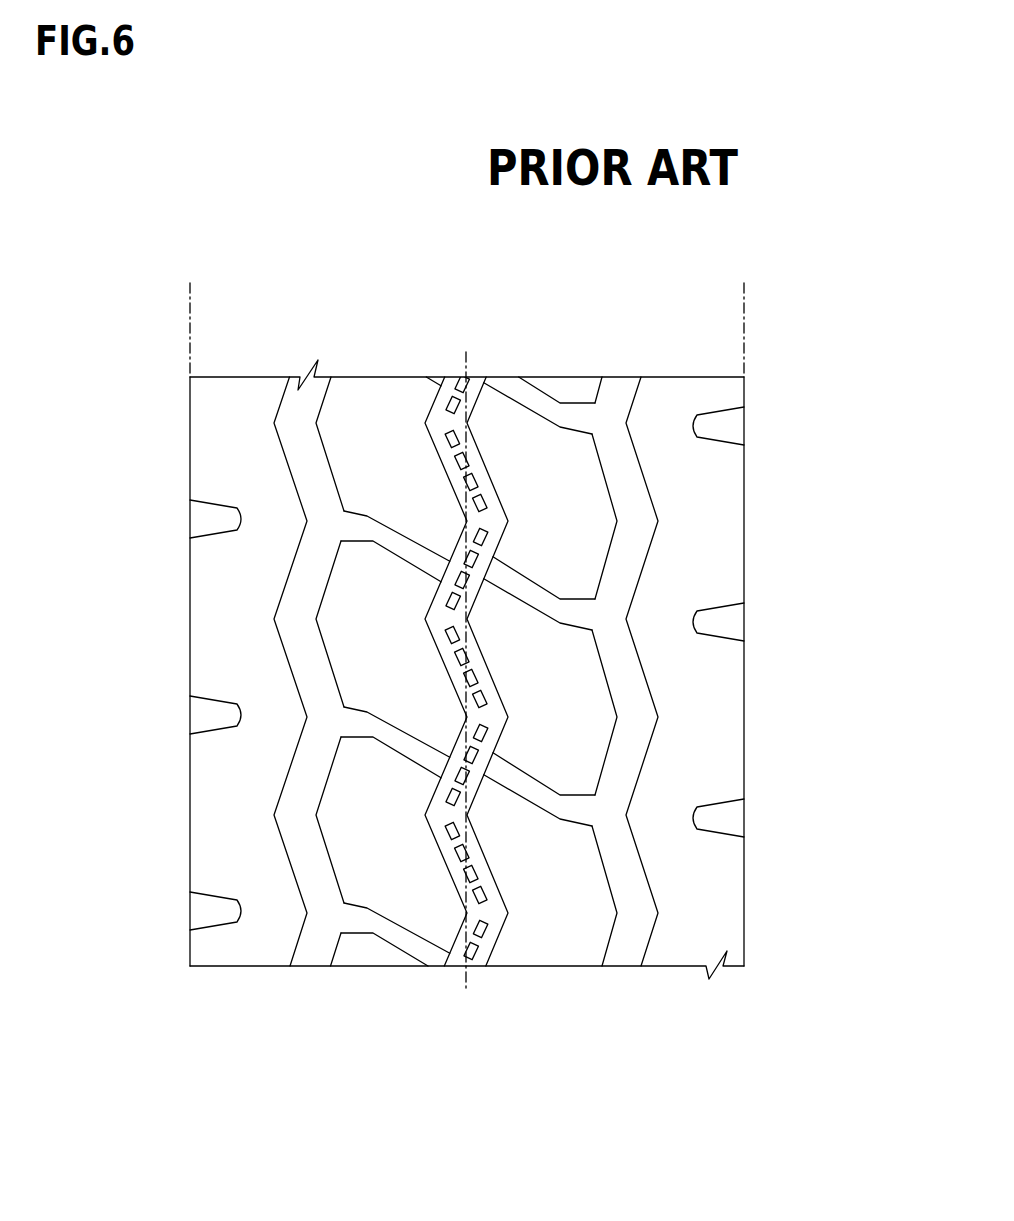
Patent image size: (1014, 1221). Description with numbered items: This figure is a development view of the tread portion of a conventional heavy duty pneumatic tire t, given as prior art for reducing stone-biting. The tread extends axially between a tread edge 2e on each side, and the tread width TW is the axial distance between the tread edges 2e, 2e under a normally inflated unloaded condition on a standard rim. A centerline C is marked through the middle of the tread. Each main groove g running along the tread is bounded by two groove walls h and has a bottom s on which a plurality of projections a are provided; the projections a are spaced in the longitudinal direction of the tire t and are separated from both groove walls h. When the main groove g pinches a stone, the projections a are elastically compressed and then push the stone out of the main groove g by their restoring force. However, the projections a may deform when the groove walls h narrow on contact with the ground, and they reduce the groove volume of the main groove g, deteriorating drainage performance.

The tire t is at (773, 282).
The tread width TW is at (744, 286).
The tread edge 2e is at (190, 410).
The tire equator C is at (466, 657).
The groove wall h is at (430, 409).
The main groove g is at (315, 946).
The projection a is at (484, 499).
The bottom s is at (483, 942).